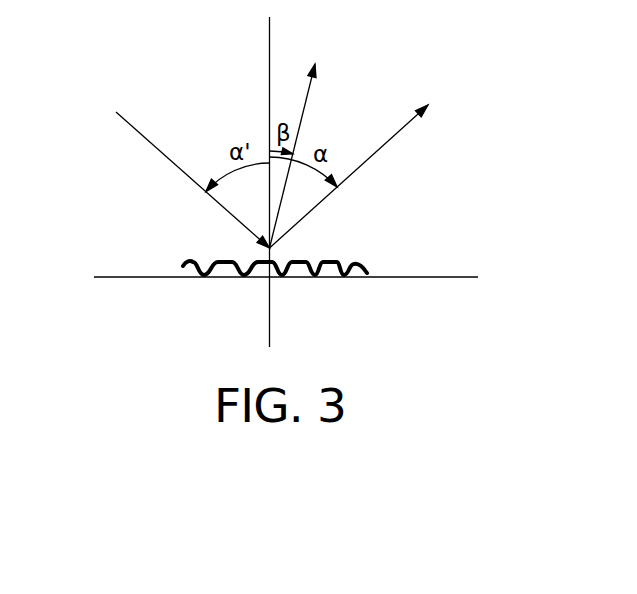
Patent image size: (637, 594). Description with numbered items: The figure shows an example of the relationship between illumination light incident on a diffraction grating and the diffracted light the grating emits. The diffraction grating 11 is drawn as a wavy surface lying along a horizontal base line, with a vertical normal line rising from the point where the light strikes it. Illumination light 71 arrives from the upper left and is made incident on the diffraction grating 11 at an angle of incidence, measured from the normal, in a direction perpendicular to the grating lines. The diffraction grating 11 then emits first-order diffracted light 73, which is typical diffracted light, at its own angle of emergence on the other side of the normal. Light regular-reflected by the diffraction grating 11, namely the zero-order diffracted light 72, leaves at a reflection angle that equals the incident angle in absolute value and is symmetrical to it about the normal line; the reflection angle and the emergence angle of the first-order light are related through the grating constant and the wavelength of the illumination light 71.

The illumination light 71 is at (130, 122).
The regular-reflected light (0-order diffracted light) 72 is at (401, 130).
The first-order diffracted light 73 is at (307, 95).
The diffraction grating 11 is at (372, 250).